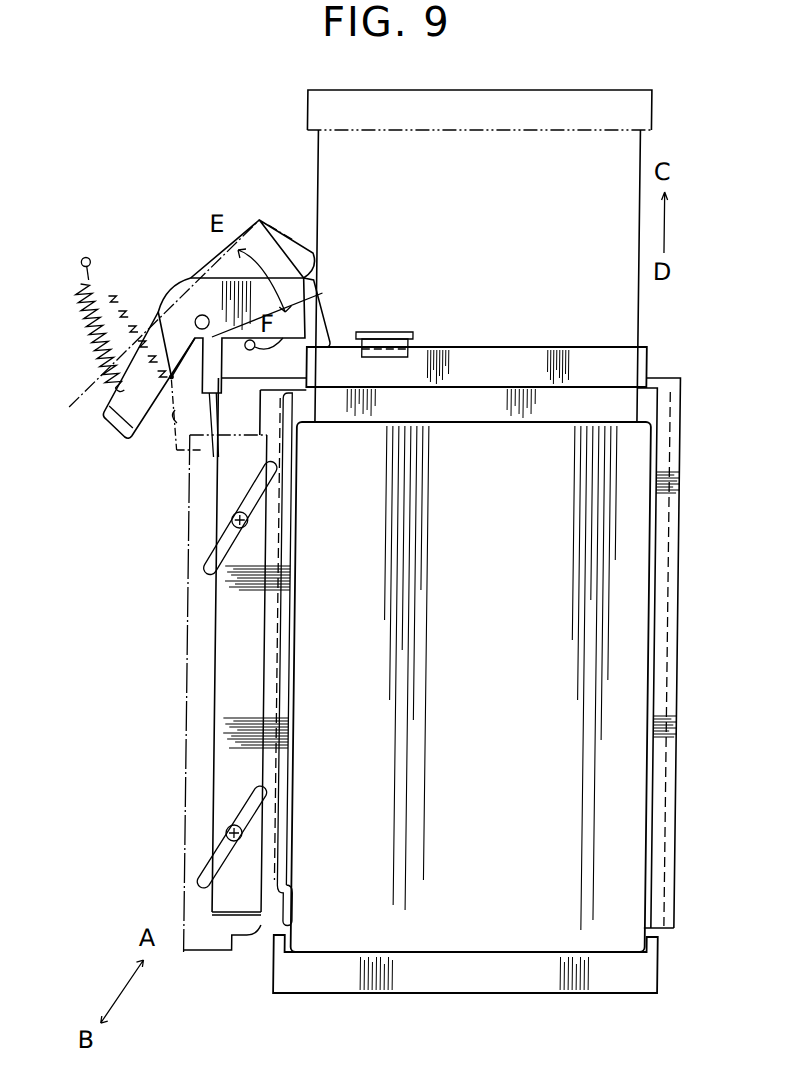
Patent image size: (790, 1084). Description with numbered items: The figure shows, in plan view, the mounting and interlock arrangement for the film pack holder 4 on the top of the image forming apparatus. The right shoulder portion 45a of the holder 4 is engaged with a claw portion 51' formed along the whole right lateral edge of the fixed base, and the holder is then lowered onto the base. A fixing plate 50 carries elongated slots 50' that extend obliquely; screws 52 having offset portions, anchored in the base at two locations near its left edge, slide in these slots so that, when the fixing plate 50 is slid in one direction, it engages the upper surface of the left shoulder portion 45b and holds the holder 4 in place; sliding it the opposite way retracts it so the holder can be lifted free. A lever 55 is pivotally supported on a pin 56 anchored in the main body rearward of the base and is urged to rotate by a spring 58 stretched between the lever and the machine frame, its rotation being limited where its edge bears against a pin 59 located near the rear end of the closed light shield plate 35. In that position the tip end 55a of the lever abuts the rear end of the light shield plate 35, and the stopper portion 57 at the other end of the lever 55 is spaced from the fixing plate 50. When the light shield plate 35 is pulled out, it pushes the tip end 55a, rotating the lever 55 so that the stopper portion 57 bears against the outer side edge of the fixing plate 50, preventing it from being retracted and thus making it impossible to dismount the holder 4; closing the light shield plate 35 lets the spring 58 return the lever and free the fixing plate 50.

The film pack holder 4 is at (632, 470).
The light shield plate 35 is at (604, 362).
The right shoulder portion 45a is at (672, 393).
The left shoulder portion 45b is at (286, 922).
The fixing plate 50 is at (207, 693).
The elongated slots 50' is at (202, 675).
The claw portion 51' is at (489, 964).
The screws 52 is at (238, 523).
The lever 55 is at (315, 290).
The tip end 55a is at (327, 347).
The pin 56 is at (201, 315).
The stopper portion 57 is at (131, 434).
The spring 58 is at (82, 280).
The pin 59 is at (322, 293).